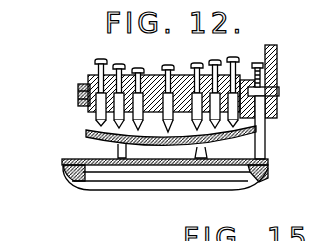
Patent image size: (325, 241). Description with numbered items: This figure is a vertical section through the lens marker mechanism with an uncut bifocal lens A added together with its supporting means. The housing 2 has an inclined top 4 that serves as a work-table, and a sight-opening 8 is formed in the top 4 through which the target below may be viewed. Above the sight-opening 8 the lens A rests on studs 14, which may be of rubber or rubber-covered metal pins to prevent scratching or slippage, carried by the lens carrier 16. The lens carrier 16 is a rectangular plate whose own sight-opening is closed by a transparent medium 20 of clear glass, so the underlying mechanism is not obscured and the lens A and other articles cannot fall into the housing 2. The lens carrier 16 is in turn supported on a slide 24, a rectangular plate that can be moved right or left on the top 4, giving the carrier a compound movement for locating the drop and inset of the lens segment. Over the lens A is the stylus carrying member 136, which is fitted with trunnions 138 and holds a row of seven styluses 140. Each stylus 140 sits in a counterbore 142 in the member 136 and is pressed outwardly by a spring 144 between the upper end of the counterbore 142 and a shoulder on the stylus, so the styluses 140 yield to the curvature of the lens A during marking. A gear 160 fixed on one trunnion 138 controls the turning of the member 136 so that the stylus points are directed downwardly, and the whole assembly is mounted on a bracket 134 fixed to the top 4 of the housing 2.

The stylus 140 is at (96, 62).
The stylus carrying member 136 is at (90, 77).
The trunnion 138 is at (78, 94).
The counterbore 142 is at (150, 74).
The spring 144 is at (185, 74).
The gear 160 is at (278, 55).
The bracket 134 is at (256, 150).
The uncut bifocal lens A is at (90, 131).
The stud 14 is at (118, 150).
The lens carrier 16 is at (270, 159).
The transparent medium 20 is at (107, 162).
The sight-opening 8 is at (143, 177).
The inclined top 4 is at (67, 174).
The slide 24 is at (268, 166).
The housing 2 is at (223, 190).